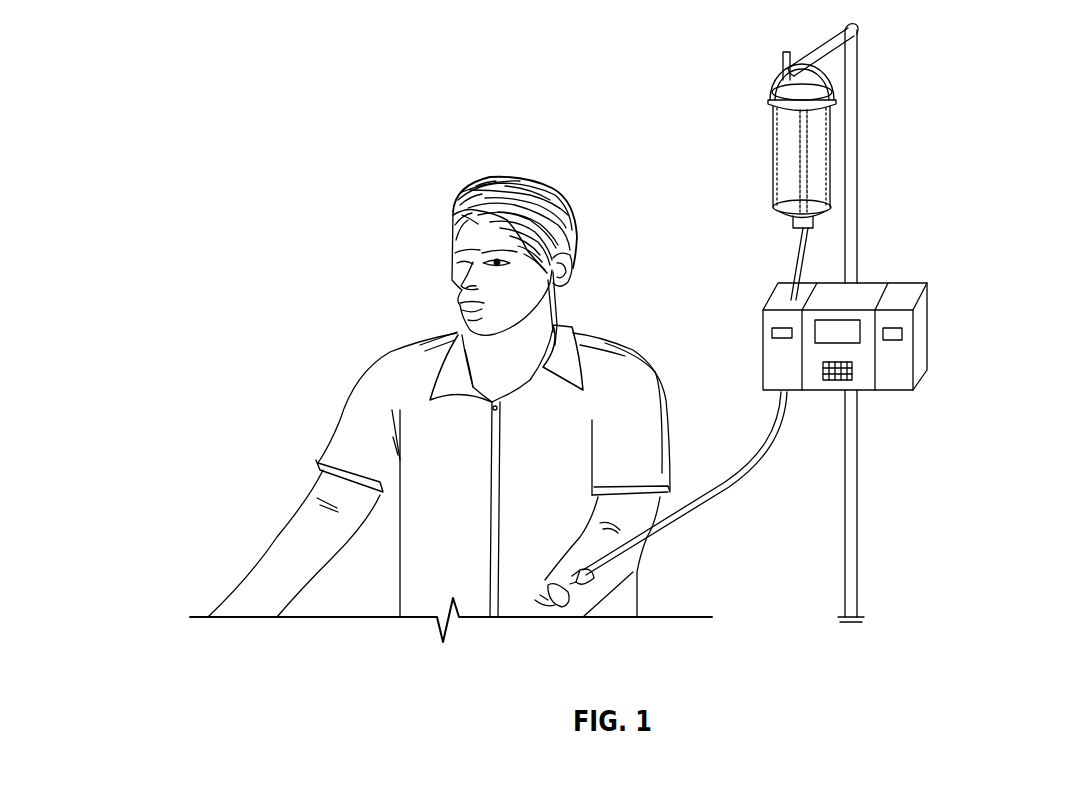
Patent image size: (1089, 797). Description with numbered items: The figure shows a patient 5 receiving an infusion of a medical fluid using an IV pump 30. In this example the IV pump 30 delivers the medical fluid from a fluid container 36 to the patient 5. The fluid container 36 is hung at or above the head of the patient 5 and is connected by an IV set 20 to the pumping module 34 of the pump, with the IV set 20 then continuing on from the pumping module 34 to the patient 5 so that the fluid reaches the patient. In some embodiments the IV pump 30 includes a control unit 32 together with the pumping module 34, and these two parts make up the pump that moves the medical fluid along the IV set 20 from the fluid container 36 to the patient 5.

The patient 5 is at (384, 128).
The IV set 20 is at (762, 483).
The IV pump 30 is at (965, 225).
The control unit 32 is at (857, 295).
The pumping module 34 is at (776, 358).
The fluid container 36 is at (785, 158).